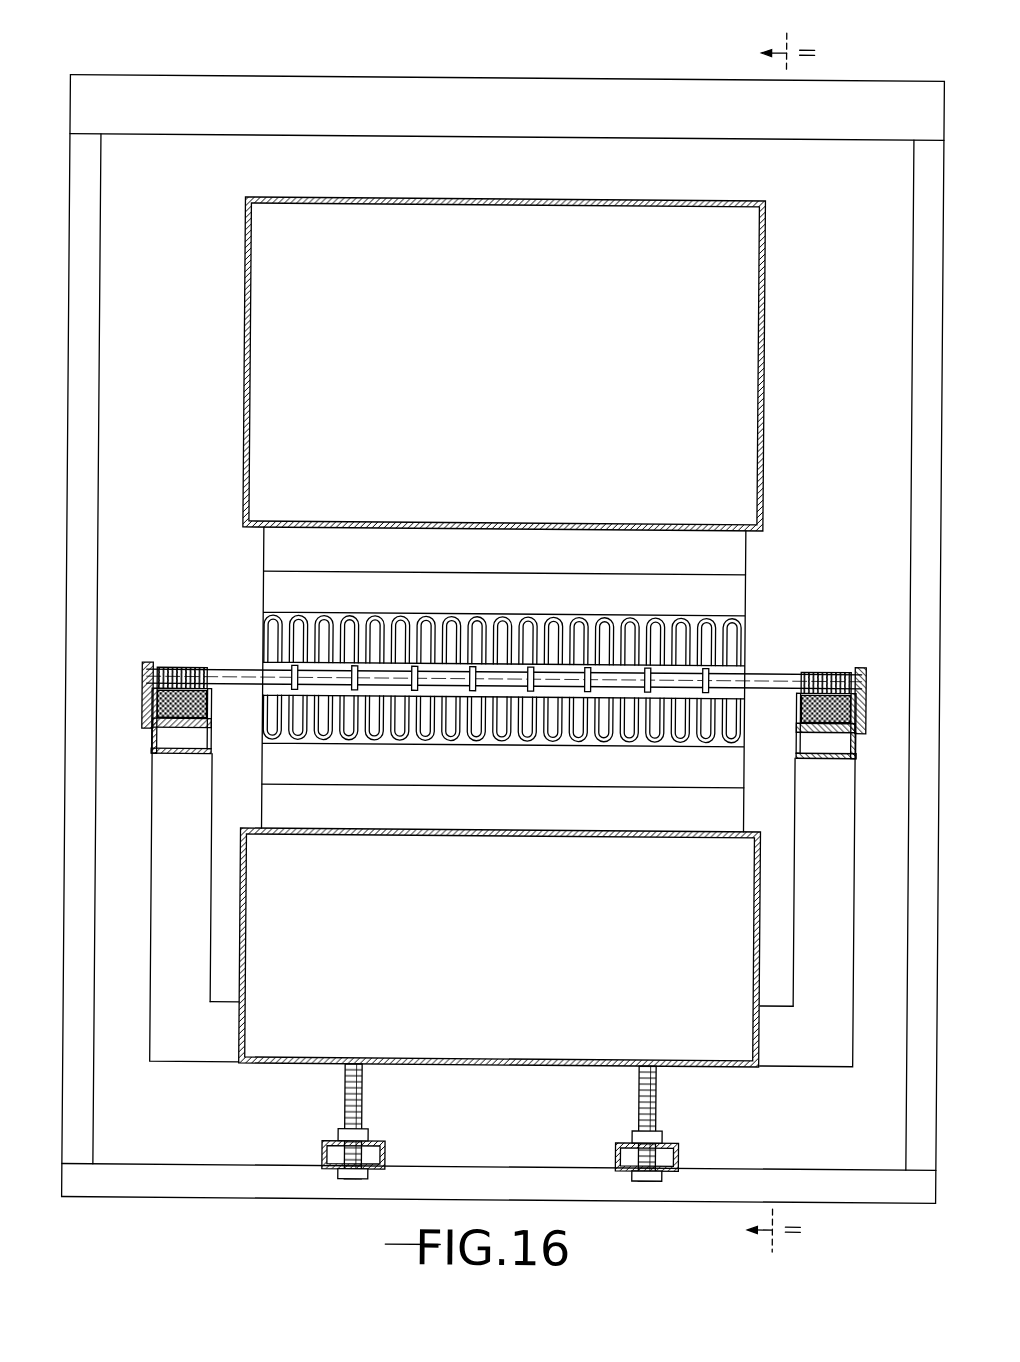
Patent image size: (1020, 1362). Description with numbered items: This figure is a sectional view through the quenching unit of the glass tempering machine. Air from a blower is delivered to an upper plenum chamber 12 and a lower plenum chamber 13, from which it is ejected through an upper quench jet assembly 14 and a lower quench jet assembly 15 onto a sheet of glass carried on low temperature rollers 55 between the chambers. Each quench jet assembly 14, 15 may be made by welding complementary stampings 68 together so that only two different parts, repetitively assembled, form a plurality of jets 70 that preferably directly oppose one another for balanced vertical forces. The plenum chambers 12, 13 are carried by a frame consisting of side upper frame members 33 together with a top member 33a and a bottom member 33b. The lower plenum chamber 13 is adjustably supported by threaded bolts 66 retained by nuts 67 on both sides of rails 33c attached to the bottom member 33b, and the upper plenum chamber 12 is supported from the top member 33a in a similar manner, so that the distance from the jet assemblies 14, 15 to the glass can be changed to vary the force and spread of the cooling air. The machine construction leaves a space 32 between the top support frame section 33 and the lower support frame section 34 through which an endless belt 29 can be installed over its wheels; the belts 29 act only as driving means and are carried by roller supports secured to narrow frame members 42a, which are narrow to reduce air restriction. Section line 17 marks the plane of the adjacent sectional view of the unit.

The upper plenum chamber 12 is at (741, 358).
The lower plenum chamber 13 is at (316, 1045).
The quench jet assembly 14 is at (751, 553).
The quench jet assembly 15 is at (754, 763).
The section line 17— 17 is at (761, 643).
The endless belt 29 is at (143, 690).
The space 32 is at (138, 868).
The top support frame section 33 is at (87, 1013).
The top member 33a is at (513, 85).
The bottom member 33b is at (300, 1185).
The rail 33c is at (326, 1160).
The lower support frame section 34 is at (178, 913).
The frame member 42a is at (154, 750).
The low temperature roller 55 is at (258, 662).
The threaded bolt 66 is at (359, 1114).
The nut 67 is at (372, 1176).
The stamping 68 is at (745, 588).
The jet 70 is at (290, 670).